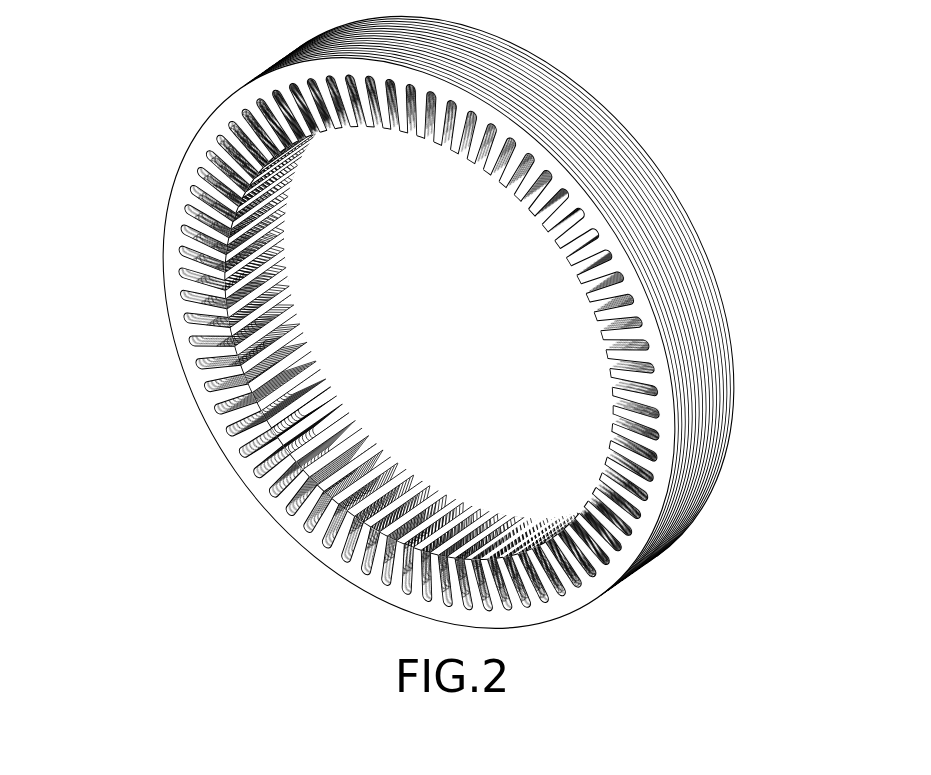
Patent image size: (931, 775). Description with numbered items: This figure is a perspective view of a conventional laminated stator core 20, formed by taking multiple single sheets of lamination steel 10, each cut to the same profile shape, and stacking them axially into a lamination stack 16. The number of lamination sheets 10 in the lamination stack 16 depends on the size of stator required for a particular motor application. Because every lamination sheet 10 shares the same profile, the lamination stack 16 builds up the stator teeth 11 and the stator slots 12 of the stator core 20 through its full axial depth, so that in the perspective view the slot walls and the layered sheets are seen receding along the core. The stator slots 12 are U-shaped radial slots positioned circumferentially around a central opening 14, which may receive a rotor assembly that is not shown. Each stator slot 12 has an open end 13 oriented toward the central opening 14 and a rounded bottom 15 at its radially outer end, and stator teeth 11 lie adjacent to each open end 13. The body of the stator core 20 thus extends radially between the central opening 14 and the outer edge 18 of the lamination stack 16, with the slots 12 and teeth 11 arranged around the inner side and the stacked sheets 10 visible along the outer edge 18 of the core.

The lamination steel sheet 10 is at (663, 221).
The stator teeth 11 is at (283, 295).
The U-shaped radial stator slots 12 is at (447, 147).
The open ends 13 is at (420, 490).
The central opening 14 is at (464, 320).
The rounded bottoms 15 is at (317, 537).
The lamination stack 16 is at (617, 108).
The outer edge 18 is at (188, 138).
The stator core 20 is at (448, 363).